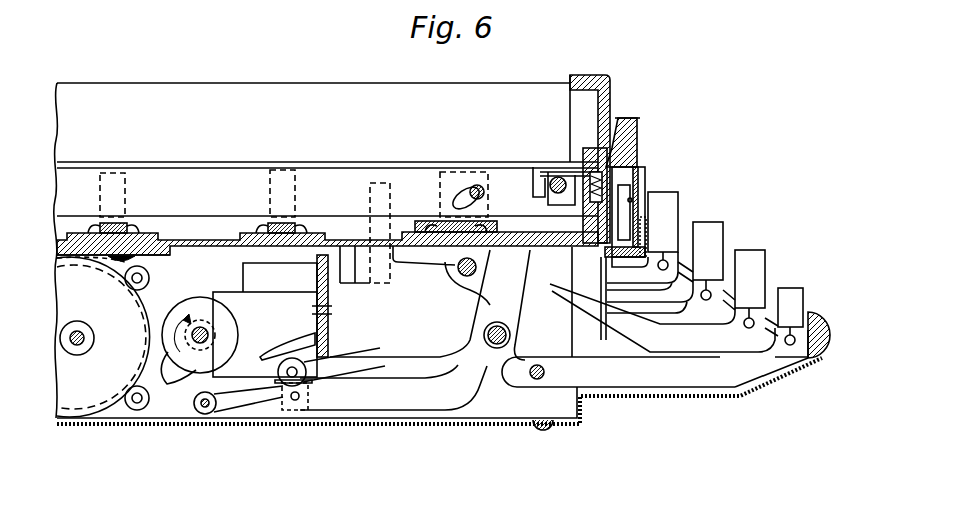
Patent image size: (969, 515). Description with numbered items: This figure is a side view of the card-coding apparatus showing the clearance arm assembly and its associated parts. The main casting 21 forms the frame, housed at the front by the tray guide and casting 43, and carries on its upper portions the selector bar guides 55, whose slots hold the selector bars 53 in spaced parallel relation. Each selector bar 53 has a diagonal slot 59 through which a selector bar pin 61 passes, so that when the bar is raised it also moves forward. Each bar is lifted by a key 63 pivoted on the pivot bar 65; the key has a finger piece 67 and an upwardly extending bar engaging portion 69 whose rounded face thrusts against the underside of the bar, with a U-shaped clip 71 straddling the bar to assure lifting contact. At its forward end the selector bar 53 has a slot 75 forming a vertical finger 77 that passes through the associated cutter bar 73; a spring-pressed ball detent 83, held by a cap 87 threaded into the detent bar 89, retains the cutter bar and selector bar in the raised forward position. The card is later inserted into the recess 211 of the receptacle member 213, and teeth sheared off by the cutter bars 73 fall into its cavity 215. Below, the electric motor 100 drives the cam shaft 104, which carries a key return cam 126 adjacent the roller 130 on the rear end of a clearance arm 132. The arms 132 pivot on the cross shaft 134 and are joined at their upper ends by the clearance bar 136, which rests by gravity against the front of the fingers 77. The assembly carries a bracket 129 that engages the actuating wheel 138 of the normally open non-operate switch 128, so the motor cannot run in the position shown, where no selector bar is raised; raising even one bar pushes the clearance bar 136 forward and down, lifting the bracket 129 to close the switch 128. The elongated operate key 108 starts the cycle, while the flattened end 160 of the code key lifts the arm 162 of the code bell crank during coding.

The main casting 21 is at (148, 232).
The front tray guide and casting 43 is at (608, 70).
The selector bar 53 is at (400, 178).
The selector bar guide 55 is at (107, 172).
The diagonal slot 59 is at (458, 200).
The selector bar pin 61 is at (478, 185).
The key 63 is at (575, 305).
The pivot bar 65 is at (466, 278).
The finger piece 67 is at (745, 250).
The bar engaging portion 69 is at (378, 268).
The U-shaped clip 71 is at (376, 183).
The cutter bar 73 is at (610, 118).
The slot 75 is at (536, 178).
The finger 77 is at (552, 180).
The spring-pressed ball detent 83 is at (636, 170).
The cap 87 is at (605, 188).
The detent bar 89 is at (625, 205).
The electric motor 100 is at (95, 402).
The cam shaft 104 is at (195, 330).
The operate key 108 is at (797, 288).
The key return cam 126 is at (172, 382).
The non-operate switch 128 is at (240, 300).
The bracket 129 is at (276, 386).
The roller 130 is at (210, 412).
The clearance arm 132 is at (390, 400).
The cross shaft 134 is at (496, 348).
The clearance bar 136 is at (558, 170).
The actuating wheel 138 is at (296, 410).
The flattened end of code key 160 is at (345, 365).
The arm of code bell crank 162 is at (305, 352).
The recess 211 is at (637, 118).
The receptacle member 213 is at (638, 135).
The cavity 215 is at (670, 198).